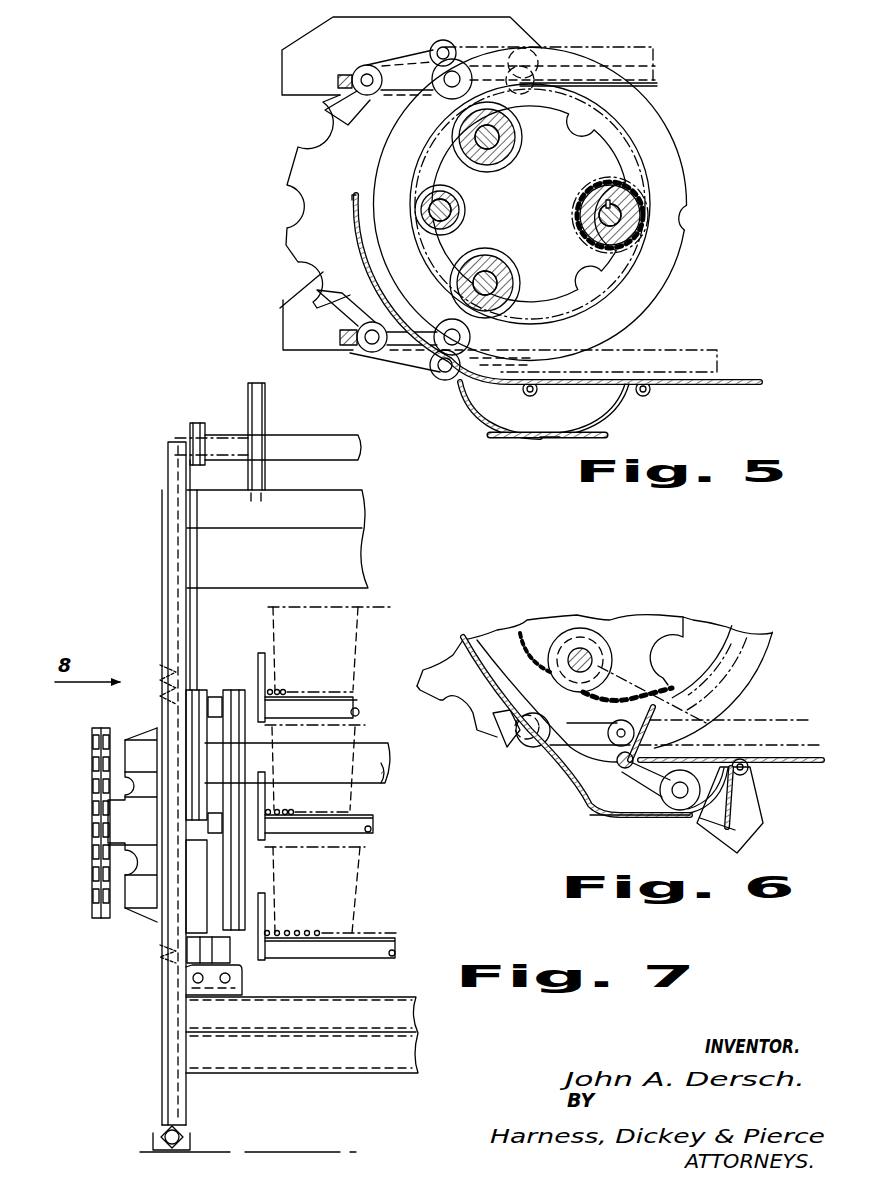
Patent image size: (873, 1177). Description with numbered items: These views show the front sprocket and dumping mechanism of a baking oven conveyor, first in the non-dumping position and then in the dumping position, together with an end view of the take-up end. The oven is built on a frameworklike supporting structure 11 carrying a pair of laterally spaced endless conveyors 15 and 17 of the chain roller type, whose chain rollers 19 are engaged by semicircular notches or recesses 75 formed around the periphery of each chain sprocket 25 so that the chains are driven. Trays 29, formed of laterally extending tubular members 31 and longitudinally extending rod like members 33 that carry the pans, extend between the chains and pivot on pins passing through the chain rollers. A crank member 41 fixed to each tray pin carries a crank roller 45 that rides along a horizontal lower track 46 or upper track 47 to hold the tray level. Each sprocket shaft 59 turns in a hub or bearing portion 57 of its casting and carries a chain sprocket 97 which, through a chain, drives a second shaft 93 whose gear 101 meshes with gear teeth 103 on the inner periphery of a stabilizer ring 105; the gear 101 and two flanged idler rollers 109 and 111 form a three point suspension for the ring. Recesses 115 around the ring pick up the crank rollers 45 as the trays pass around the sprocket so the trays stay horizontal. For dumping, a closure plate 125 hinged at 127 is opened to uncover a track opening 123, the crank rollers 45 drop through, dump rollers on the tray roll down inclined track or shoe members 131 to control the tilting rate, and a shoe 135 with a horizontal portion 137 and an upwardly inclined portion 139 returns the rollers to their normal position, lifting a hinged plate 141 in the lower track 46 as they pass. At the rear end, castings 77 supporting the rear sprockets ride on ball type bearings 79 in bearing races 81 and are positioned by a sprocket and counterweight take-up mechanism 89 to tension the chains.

In FIG. 7, the frameworklike supporting structure 11 is at (160, 554).
In FIG. 7, the endless conveyor 15 is at (246, 878).
In FIG. 5, the endless conveyor 17 is at (455, 45).
In FIG. 6, the endless conveyor 17 is at (520, 748).
In FIG. 5, the chain rollers 19 is at (470, 52).
In FIG. 6, the chain rollers 19 is at (530, 750).
In FIG. 5, the chain sprocket 25 is at (290, 258).
In FIG. 6, the chain sprocket 25 is at (718, 618).
In FIG. 7, the trays 29 is at (360, 712).
In FIG. 7, the tubular members 31 is at (355, 698).
In FIG. 7, the rod like members 33 is at (283, 688).
In FIG. 5, the crank member 41 is at (372, 66).
In FIG. 6, the crank member 41 is at (660, 792).
In FIG. 5, the crank roller 45 is at (440, 92).
In FIG. 6, the crank roller 45 is at (668, 808).
In FIG. 5, the lower track 46 is at (720, 378).
In FIG. 6, the lower track 46 is at (800, 756).
In FIG. 7, the lower track 46 is at (181, 977).
In FIG. 5, the upper track 47 is at (655, 82).
In FIG. 5, the hub or bearing portion 57 is at (466, 212).
In FIG. 5, the shaft 59 is at (452, 203).
In FIG. 5, the notches or recesses 75 is at (298, 282).
In FIG. 6, the notches or recesses 75 is at (462, 732).
In FIG. 7, the castings 77 is at (142, 921).
In FIG. 7, the ball type bearings 79 is at (163, 677).
In FIG. 7, the bearing races 81 is at (157, 695).
In FIG. 7, the take-up mechanism 89 is at (266, 397).
In FIG. 5, the shaft 93 is at (645, 222).
In FIG. 7, the chain sprocket 97 is at (90, 918).
In FIG. 5, the gear 101 is at (640, 196).
In FIG. 5, the gear teeth 103 is at (650, 246).
In FIG. 6, the gear teeth 103 is at (528, 625).
In FIG. 5, the stabilizer ring 105 is at (662, 168).
In FIG. 6, the stabilizer ring 105 is at (772, 654).
In FIG. 5, the flanged idler roller 109 is at (495, 266).
In FIG. 5, the flanged idler roller 111 is at (500, 158).
In FIG. 5, the recesses 115 is at (670, 234).
In FIG. 6, the track openings 123 is at (722, 745).
In FIG. 6, the closure plate 125 is at (735, 813).
In FIG. 6, the hinge 127 is at (748, 760).
In FIG. 5, the inclined track or shoe members 131 is at (615, 416).
In FIG. 6, the inclined track or shoe members 131 is at (735, 790).
In FIG. 5, the shoe 135 is at (522, 443).
In FIG. 6, the shoe 135 is at (612, 818).
In FIG. 5, the horizontal portion 137 is at (550, 438).
In FIG. 6, the horizontal portion 137 is at (684, 812).
In FIG. 5, the upwardly inclined portion 139 is at (470, 408).
In FIG. 6, the upwardly inclined portion 139 is at (575, 789).
In FIG. 5, the hinged plate 141 is at (510, 358).
In FIG. 6, the hinged plate 141 is at (672, 706).